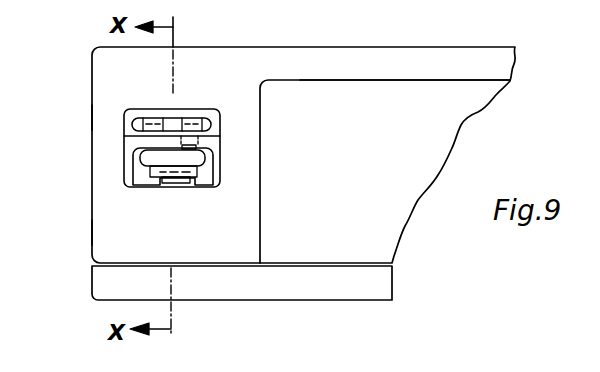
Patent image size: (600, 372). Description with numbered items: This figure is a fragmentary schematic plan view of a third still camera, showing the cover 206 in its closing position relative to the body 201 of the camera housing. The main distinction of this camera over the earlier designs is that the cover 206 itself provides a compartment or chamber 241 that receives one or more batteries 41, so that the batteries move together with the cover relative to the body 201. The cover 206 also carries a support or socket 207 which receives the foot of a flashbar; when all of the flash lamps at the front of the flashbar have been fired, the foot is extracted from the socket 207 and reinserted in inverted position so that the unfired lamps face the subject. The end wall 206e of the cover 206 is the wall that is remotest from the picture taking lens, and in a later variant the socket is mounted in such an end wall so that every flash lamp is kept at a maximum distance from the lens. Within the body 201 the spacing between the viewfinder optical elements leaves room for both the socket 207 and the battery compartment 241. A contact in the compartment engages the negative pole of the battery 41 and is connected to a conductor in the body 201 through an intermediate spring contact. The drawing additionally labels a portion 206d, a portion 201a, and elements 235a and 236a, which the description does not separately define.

The cover 206 is at (355, 28).
The end wall 206e is at (92, 118).
The housing side wall lower portion 206d is at (92, 232).
The body 201 is at (430, 140).
The base plate 201a is at (390, 279).
The socket 207 is at (155, 131).
The upper contact slot 235a is at (152, 118).
The contact element 236a is at (200, 125).
The battery compartment 241 is at (207, 165).
The battery 41 is at (147, 157).